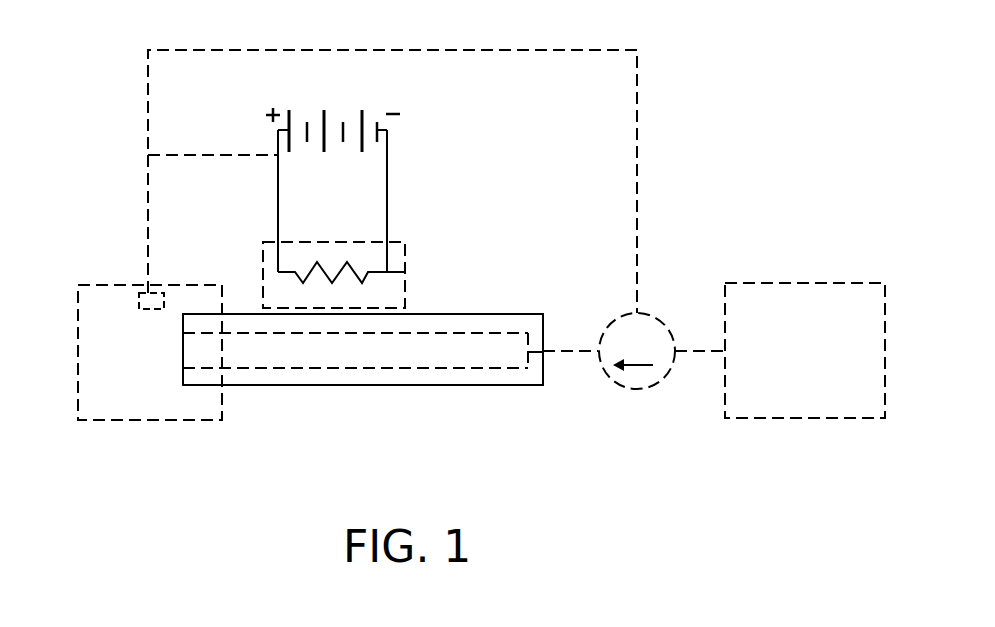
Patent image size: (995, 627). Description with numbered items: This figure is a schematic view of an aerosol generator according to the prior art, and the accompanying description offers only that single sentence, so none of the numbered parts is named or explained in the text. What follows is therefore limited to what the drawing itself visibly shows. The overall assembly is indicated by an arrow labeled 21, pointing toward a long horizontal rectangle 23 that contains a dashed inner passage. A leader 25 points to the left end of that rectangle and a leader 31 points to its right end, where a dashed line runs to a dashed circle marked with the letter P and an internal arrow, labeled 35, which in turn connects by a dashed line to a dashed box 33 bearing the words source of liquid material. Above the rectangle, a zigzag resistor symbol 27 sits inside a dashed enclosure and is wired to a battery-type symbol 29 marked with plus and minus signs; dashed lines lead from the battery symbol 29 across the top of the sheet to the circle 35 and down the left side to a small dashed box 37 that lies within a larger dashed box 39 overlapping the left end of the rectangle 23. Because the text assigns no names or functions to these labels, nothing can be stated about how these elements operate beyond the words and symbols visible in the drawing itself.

The apparatus 21 is at (356, 412).
The cell housing 23 is at (389, 387).
The first end of cell 25 is at (183, 353).
The resistor 27 is at (405, 272).
The battery / power supply 29 is at (378, 101).
The inlet end of cell 31 is at (543, 373).
The source of liquid material 33 is at (773, 418).
The pump 35 is at (645, 389).
The electrode 37 is at (140, 292).
The electrode assembly 39 is at (85, 284).